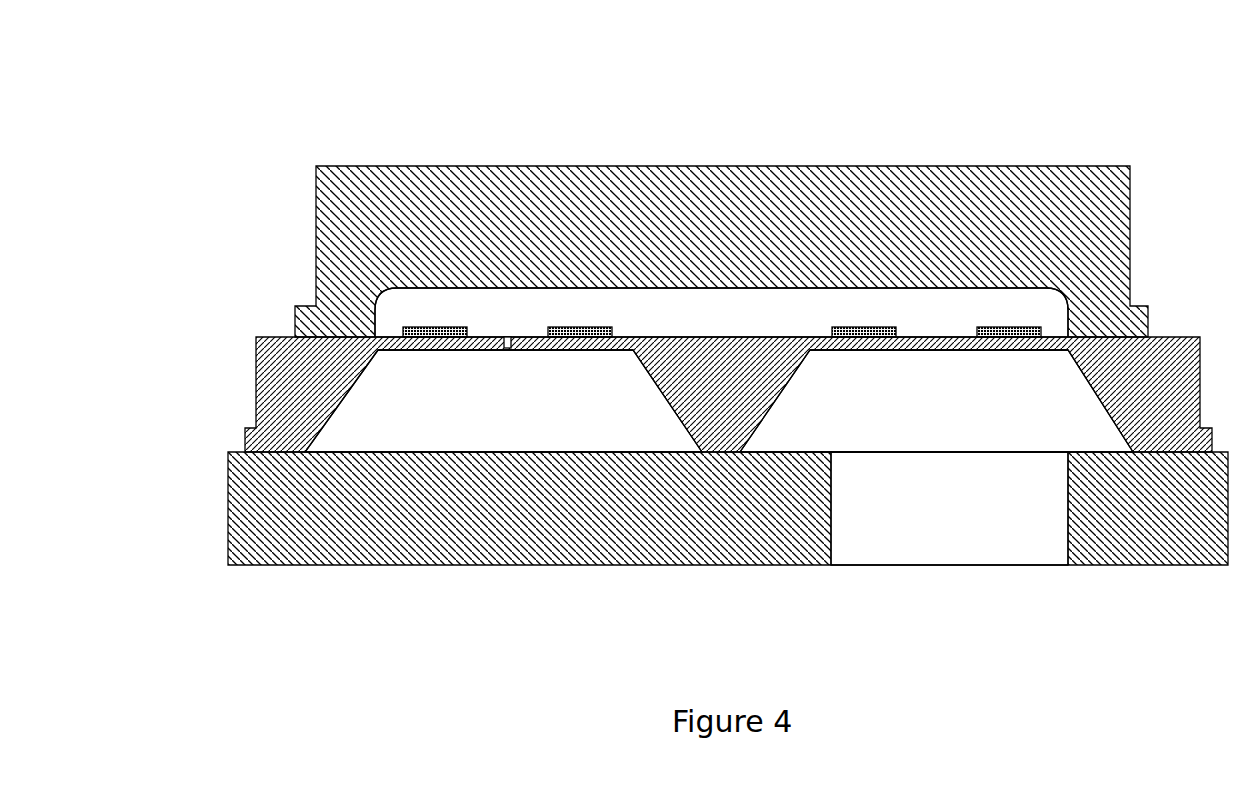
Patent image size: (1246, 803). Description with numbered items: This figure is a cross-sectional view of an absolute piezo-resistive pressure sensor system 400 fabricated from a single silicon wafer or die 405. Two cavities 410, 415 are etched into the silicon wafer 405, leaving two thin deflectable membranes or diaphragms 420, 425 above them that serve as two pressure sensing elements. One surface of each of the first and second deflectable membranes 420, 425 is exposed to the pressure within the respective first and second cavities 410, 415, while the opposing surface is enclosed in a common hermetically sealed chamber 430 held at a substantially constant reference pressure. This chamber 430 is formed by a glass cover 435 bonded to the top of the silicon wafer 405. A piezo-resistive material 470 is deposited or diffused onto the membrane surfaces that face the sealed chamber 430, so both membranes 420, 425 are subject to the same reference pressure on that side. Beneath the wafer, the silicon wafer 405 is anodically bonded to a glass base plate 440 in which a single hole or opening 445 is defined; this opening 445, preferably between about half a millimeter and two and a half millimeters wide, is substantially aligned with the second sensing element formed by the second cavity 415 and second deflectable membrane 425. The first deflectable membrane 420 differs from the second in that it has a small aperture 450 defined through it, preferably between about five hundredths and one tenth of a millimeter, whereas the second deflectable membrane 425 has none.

The absolute piezo-resistive pressure sensor system 400 is at (325, 158).
The single silicon wafer or die 405 is at (305, 394).
The first cavity 410 is at (503, 401).
The second cavity 415 is at (936, 401).
The first deflectable membrane 420 is at (553, 347).
The second deflectable membrane 425 is at (945, 350).
The hermetically sealed chamber 430 is at (923, 313).
The glass cover 435 is at (488, 218).
The glass base plate 440 is at (313, 507).
The hole or opening 445 is at (949, 508).
The aperture 450 is at (507, 348).
The piezo-resistive material 470 is at (585, 327).